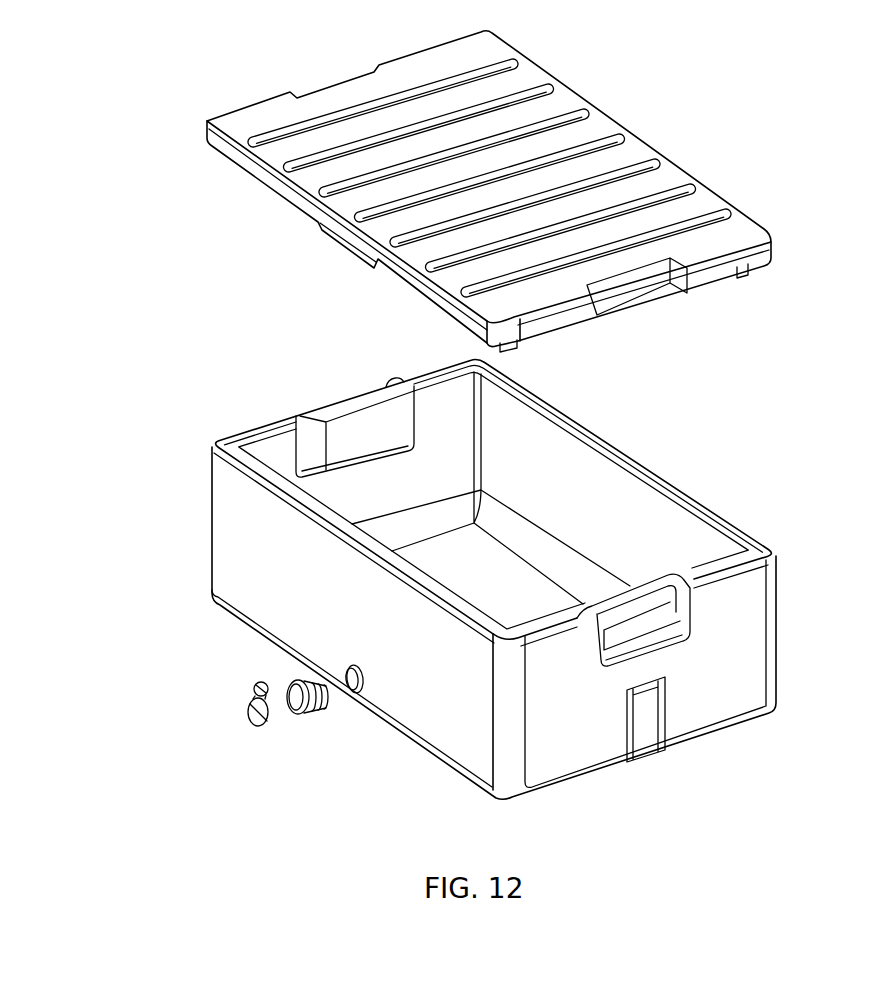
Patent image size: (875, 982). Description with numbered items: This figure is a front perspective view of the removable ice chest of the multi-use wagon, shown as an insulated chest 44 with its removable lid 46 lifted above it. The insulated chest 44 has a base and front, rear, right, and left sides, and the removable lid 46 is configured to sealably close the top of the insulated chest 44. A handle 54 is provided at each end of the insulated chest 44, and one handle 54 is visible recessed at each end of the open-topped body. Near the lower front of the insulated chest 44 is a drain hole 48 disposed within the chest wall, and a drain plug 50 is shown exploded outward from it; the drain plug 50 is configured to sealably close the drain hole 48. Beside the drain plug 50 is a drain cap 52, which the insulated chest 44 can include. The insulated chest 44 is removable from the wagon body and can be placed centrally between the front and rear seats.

The insulated chest 44 is at (648, 480).
The removable lid 46 is at (737, 237).
The drain hole 48 is at (345, 674).
The drain plug 50 is at (307, 714).
The drain cap 52 is at (262, 724).
The handle 54 is at (340, 412).